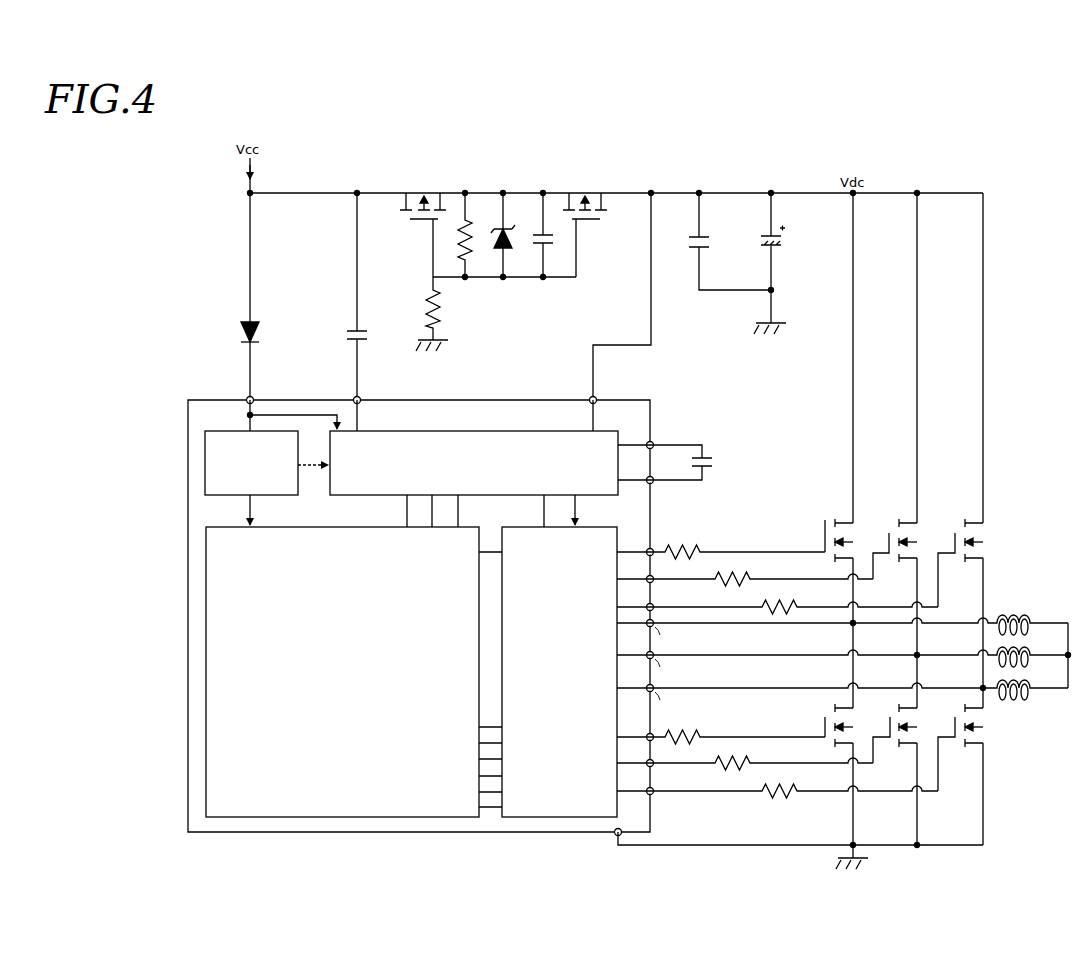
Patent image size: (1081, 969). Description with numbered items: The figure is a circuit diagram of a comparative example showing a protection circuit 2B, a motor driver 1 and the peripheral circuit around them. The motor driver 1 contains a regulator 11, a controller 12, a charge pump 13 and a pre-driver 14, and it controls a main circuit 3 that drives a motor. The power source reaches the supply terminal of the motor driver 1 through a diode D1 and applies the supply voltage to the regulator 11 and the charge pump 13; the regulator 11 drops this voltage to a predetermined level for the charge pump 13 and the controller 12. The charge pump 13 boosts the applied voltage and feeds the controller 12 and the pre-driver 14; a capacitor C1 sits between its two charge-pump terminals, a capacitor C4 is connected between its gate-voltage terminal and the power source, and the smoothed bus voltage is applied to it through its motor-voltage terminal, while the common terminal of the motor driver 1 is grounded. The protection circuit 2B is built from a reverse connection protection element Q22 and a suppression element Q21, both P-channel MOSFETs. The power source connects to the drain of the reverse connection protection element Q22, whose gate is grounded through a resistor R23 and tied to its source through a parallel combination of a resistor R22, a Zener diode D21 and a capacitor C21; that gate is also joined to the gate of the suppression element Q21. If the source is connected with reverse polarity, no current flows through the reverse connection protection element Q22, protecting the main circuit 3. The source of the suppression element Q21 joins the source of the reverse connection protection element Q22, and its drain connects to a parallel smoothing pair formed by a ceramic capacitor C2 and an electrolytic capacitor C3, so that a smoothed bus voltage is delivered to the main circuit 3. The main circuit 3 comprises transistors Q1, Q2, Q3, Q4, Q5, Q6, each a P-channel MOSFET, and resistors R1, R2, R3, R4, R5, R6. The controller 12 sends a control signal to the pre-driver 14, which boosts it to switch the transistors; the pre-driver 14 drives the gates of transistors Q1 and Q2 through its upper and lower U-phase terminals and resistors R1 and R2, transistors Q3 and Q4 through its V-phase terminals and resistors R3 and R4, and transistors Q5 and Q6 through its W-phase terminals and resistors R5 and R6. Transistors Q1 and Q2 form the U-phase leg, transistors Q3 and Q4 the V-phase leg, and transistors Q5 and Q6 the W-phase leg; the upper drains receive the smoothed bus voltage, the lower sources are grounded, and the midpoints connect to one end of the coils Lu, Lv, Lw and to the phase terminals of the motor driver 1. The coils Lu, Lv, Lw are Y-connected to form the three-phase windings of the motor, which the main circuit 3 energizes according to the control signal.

The motor driver 1 is at (636, 399).
The protection circuit 2B is at (656, 186).
The main circuit 3 is at (806, 492).
The regulator 11 is at (208, 431).
The controller 12 is at (208, 527).
The charge pump 13 is at (608, 431).
The pre-driver 14 is at (615, 527).
The diode D1 is at (261, 296).
The capacitor C4 is at (365, 296).
The reverse connection protection element Q22 is at (423, 217).
The suppression element Q21 is at (585, 217).
The resistor R22 is at (465, 244).
The resistor R23 is at (423, 314).
The Zener diode D21 is at (503, 244).
The capacitor C21 is at (543, 244).
The ceramic capacitor C2 is at (721, 241).
The electrolytic capacitor C3 is at (779, 263).
The capacitor C1 is at (690, 462).
The transistor Q1 is at (826, 540).
The transistor Q2 is at (826, 725).
The transistor Q3 is at (891, 549).
The transistor Q4 is at (891, 733).
The transistor Q5 is at (956, 563).
The transistor Q6 is at (956, 747).
The resistor R1 is at (737, 547).
The resistor R2 is at (737, 732).
The resistor R3 is at (761, 574).
The resistor R4 is at (761, 758).
The resistor R5 is at (794, 601).
The resistor R6 is at (794, 786).
The coil Lu is at (859, 620).
The coil Lv is at (859, 653).
The coil Lw is at (859, 686).